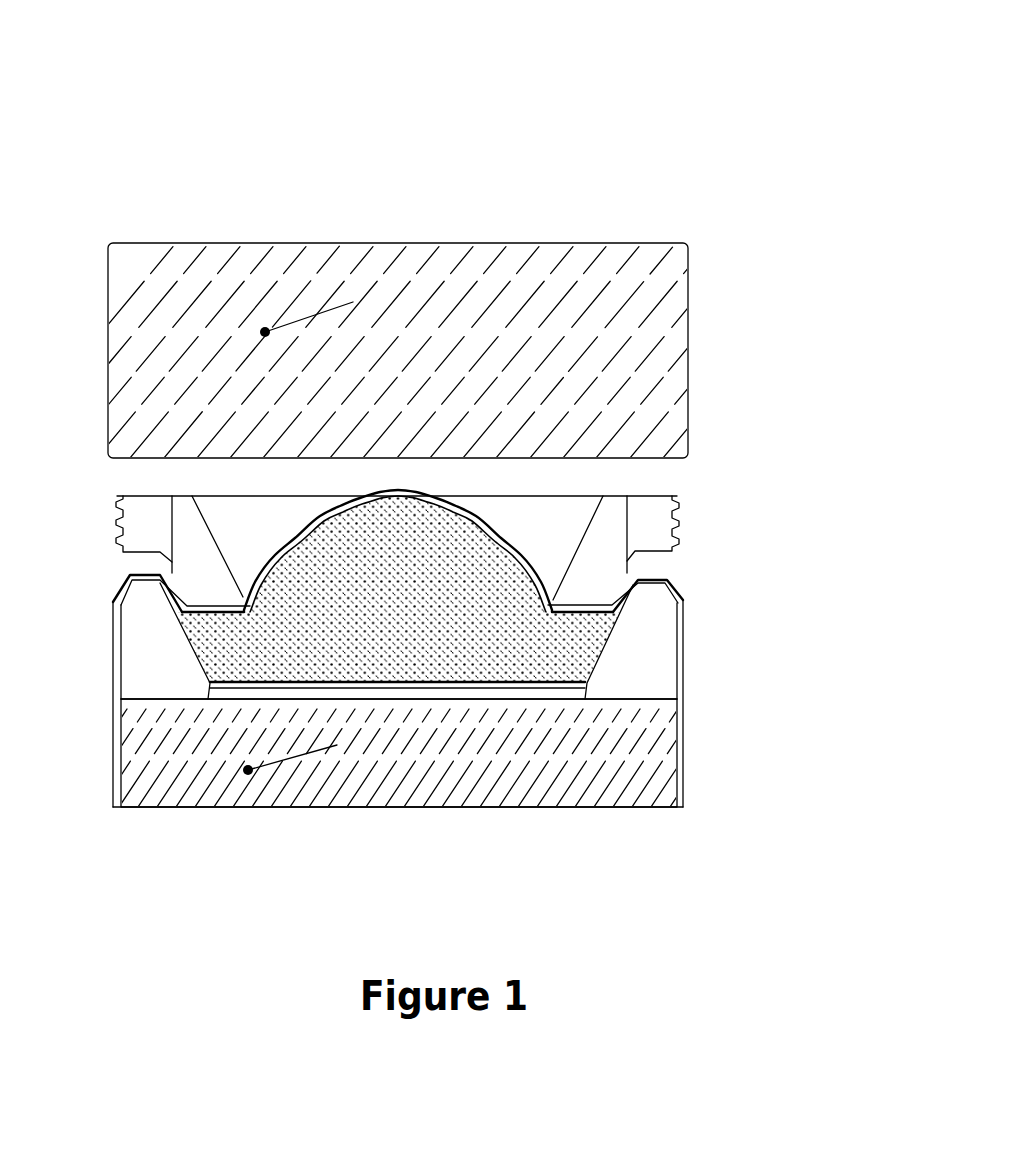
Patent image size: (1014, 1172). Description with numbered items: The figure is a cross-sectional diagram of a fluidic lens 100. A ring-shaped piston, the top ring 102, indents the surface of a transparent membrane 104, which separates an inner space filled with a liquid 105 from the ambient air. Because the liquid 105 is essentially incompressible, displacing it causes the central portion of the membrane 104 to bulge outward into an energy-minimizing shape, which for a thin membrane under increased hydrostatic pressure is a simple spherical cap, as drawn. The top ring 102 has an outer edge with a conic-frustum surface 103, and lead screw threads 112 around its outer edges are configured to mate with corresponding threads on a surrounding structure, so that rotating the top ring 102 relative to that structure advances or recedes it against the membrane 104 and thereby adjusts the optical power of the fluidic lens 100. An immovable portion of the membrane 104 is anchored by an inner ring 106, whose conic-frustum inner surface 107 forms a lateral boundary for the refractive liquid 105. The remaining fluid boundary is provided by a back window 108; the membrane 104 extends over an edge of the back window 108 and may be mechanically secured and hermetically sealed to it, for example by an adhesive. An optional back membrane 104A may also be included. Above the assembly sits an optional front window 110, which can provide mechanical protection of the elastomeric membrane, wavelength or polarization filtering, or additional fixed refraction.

The fluidic lens 100 is at (85, 54).
The top ring 102 is at (615, 518).
The conic-frustum surface 103 is at (627, 577).
The transparent membrane 104 is at (540, 499).
The back membrane 104A is at (575, 683).
The liquid 105 is at (350, 590).
The inner ring 106 is at (638, 638).
The conic-frustum inner surface 107 is at (601, 653).
The back window 108 is at (583, 783).
The front window 110 is at (633, 292).
The lead screw threads 112 is at (117, 520).